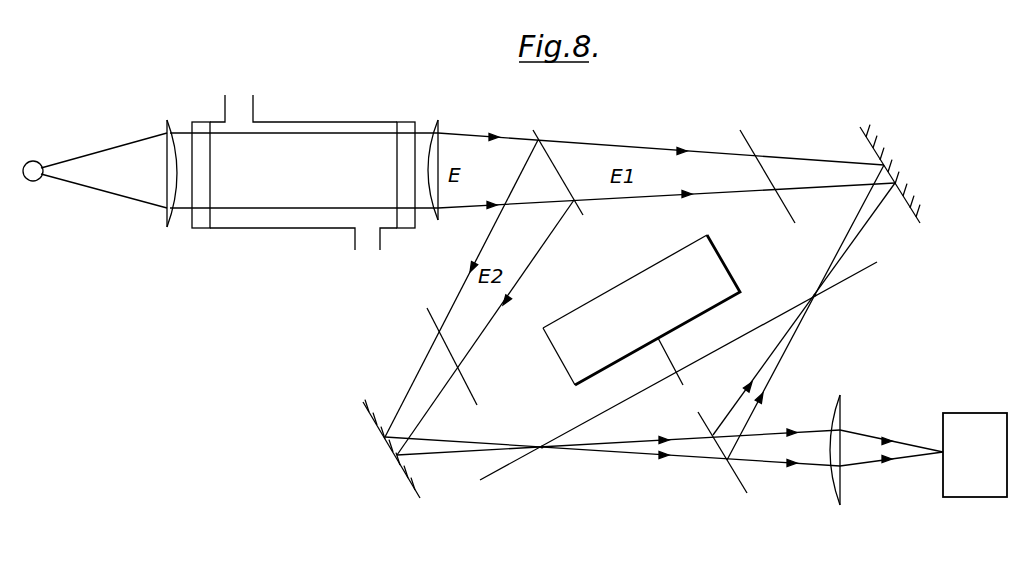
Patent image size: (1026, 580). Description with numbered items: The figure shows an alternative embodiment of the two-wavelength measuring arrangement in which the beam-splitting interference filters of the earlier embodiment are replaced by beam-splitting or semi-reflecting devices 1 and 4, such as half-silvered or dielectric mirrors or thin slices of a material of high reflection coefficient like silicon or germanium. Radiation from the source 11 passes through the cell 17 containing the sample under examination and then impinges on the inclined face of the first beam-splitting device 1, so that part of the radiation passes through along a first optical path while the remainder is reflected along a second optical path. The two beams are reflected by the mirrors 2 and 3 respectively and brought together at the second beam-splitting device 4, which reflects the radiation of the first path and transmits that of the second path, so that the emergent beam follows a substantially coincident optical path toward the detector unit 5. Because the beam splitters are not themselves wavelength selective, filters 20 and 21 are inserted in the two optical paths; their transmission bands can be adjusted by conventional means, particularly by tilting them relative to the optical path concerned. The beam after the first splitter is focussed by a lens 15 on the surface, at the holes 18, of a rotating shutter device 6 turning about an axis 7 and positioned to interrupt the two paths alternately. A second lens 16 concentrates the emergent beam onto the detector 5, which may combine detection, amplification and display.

The beam-splitting device 1 is at (540, 131).
The mirror 2 is at (884, 163).
The mirror 3 is at (408, 476).
The beam-splitting device 4 is at (732, 480).
The detector unit 5 is at (975, 455).
The rotating shutter device 6 is at (630, 400).
The axis 7 is at (668, 356).
The source 11 is at (41, 164).
The lens 15 is at (437, 142).
The second lens 16 is at (833, 478).
The cell 17 is at (303, 140).
The holes 18 is at (818, 296).
The filter 20 is at (753, 148).
The filter 21 is at (427, 318).